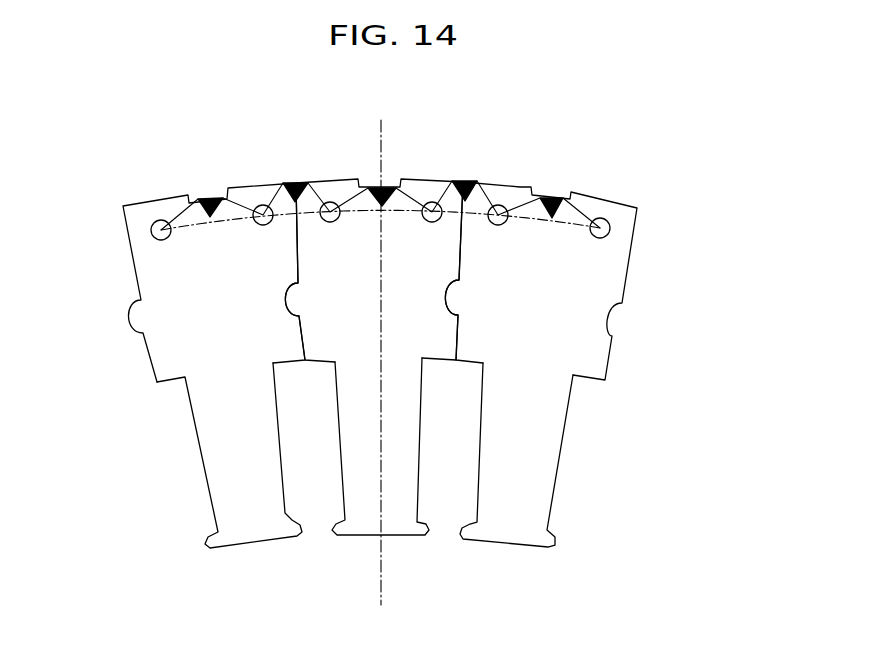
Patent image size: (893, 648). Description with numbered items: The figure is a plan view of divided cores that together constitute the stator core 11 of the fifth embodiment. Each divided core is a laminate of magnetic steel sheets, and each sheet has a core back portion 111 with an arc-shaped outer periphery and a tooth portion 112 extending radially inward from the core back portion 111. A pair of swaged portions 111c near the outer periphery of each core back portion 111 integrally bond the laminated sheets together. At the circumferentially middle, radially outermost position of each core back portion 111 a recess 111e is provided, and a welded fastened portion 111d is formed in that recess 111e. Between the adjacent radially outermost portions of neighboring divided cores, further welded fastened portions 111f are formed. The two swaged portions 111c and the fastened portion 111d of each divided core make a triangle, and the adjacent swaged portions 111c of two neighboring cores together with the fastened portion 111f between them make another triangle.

The stator core 11 is at (142, 161).
The core back portion 111 is at (578, 282).
The tooth portion 112 is at (527, 490).
The swaged portions 111c is at (603, 219).
The fastened portion 111d is at (553, 196).
The recess 111e is at (370, 186).
The fastened portion 111f is at (467, 179).